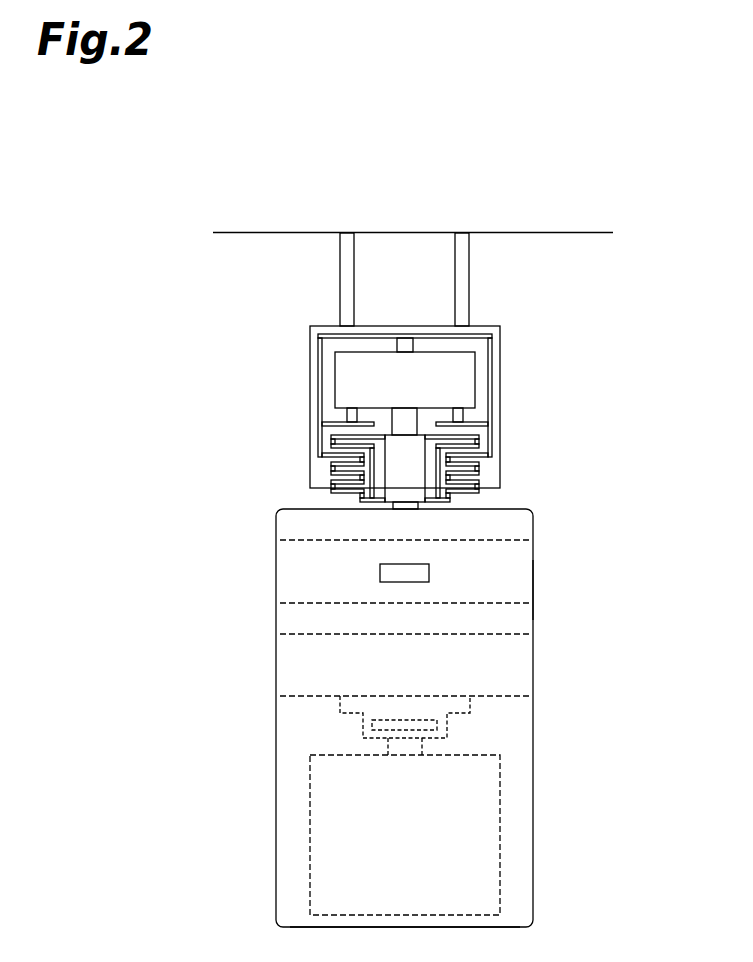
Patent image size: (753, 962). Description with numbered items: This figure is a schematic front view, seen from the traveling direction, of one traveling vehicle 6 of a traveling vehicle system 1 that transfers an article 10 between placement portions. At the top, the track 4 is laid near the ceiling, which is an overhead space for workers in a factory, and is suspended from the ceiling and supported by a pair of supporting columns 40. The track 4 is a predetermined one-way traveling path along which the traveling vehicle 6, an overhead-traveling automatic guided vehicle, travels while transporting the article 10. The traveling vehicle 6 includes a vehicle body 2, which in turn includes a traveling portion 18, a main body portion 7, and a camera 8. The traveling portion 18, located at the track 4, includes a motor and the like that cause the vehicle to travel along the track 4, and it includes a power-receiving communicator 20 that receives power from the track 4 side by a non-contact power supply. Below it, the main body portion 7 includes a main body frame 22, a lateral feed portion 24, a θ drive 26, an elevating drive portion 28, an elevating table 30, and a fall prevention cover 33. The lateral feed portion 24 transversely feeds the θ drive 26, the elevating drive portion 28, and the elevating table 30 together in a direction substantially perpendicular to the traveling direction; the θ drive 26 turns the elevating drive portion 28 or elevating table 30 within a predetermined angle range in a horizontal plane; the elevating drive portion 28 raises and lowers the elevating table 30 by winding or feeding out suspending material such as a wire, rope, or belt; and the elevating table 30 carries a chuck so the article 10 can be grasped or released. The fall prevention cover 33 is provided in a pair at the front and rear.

The traveling vehicle system 1 is at (655, 244).
The vehicle body 2 is at (272, 540).
The track 4 is at (500, 405).
The traveling vehicle 6 is at (632, 473).
The main body portion 7 is at (533, 588).
The camera 8 is at (380, 573).
The article 10 is at (500, 793).
The traveling portion 18 is at (476, 358).
The power-receiving communicator 20 is at (412, 470).
The main body frame 22 is at (522, 522).
The lateral feed portion 24 is at (522, 561).
The θ drive 26 is at (522, 619).
The elevating drive portion 28 is at (525, 670).
The elevating table 30 is at (472, 706).
The fall prevention cover 33 is at (522, 880).
The supporting column 40 is at (340, 280).